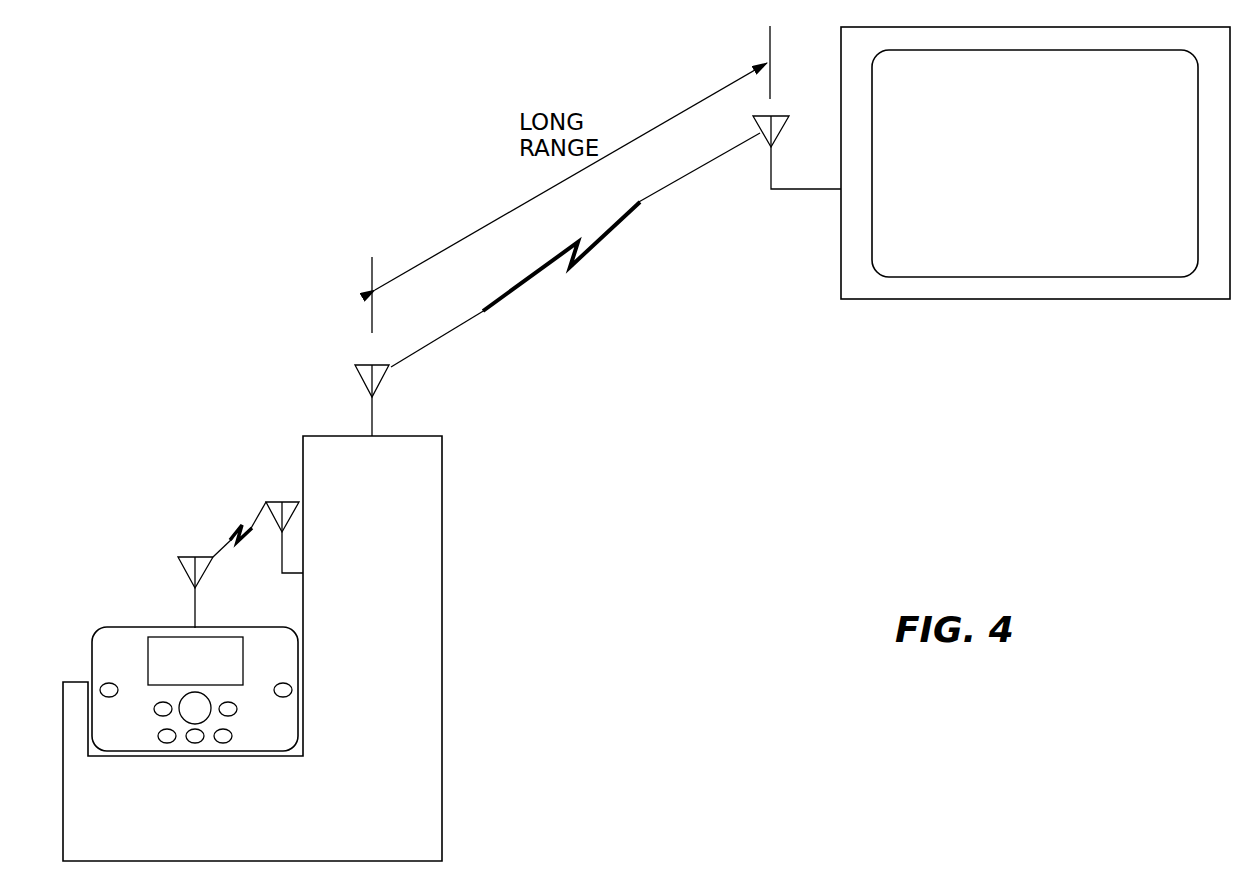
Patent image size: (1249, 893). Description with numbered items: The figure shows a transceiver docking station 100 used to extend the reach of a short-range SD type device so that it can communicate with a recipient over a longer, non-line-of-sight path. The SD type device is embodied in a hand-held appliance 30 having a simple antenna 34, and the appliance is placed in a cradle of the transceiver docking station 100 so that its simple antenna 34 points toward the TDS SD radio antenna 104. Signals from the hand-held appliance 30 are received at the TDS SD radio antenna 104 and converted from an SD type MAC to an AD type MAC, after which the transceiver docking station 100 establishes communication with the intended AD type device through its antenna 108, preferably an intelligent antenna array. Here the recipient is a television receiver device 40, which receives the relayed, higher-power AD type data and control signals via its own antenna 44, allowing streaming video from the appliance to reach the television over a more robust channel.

The hand-held appliance 30 is at (178, 627).
The simple antenna 34 is at (178, 557).
The television receiver device 40 is at (1036, 300).
The antenna 44 is at (759, 135).
The transceiver docking station 100 is at (442, 560).
The TDS SD radio antenna 104 is at (288, 502).
The antenna 108 is at (357, 381).